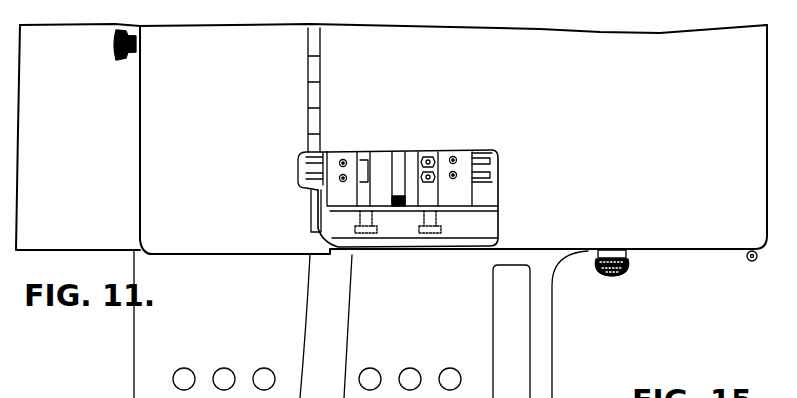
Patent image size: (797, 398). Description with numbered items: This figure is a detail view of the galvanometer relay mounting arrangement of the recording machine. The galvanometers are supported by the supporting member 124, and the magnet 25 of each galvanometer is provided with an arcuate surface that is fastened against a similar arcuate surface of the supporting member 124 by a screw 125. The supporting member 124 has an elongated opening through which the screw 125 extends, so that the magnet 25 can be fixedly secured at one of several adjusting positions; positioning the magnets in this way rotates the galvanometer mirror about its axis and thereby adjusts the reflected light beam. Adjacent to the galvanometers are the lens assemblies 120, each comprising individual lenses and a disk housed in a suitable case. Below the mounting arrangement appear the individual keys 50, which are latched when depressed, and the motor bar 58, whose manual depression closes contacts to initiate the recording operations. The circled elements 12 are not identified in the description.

The containers 12 is at (317, 379).
The magnet 25 is at (310, 179).
The keys 50 is at (446, 368).
The motor bar 58 is at (515, 325).
The lens assembly 120 is at (372, 155).
The supporting member 124 is at (455, 210).
The screw 125 is at (343, 159).